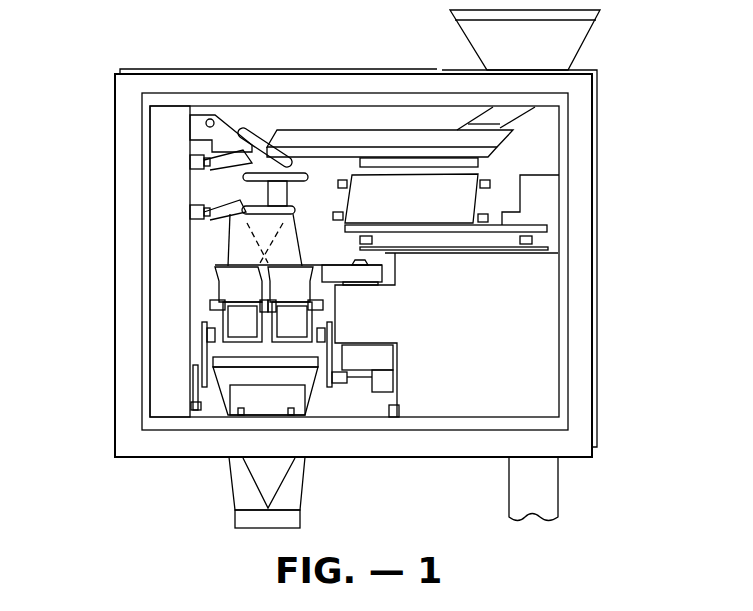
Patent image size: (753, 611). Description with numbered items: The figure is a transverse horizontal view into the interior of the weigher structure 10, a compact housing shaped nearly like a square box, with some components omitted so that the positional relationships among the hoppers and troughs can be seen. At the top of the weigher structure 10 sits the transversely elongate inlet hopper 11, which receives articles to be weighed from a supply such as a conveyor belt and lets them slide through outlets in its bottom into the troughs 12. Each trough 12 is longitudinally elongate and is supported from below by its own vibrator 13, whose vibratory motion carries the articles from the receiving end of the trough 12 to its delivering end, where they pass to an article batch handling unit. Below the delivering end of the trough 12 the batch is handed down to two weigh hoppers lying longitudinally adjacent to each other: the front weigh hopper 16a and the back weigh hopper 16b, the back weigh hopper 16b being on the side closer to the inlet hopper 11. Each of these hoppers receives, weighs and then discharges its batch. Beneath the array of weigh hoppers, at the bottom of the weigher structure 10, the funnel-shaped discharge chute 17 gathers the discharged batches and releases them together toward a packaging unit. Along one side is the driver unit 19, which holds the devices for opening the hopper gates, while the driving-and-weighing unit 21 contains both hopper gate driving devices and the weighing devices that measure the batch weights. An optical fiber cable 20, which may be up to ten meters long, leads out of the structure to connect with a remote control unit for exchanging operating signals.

The weigher structure 10 is at (654, 132).
The inlet hopper 11 is at (482, 43).
The trough 12 is at (347, 137).
The vibrator 13 is at (437, 208).
The front weigh hopper 16a is at (230, 287).
The back weigh hopper 16b is at (303, 287).
The discharge chute 17 is at (293, 472).
The driver unit 19 is at (158, 348).
The optical fiber cable 20 is at (545, 477).
The driving-and-weighing unit 21 is at (540, 345).